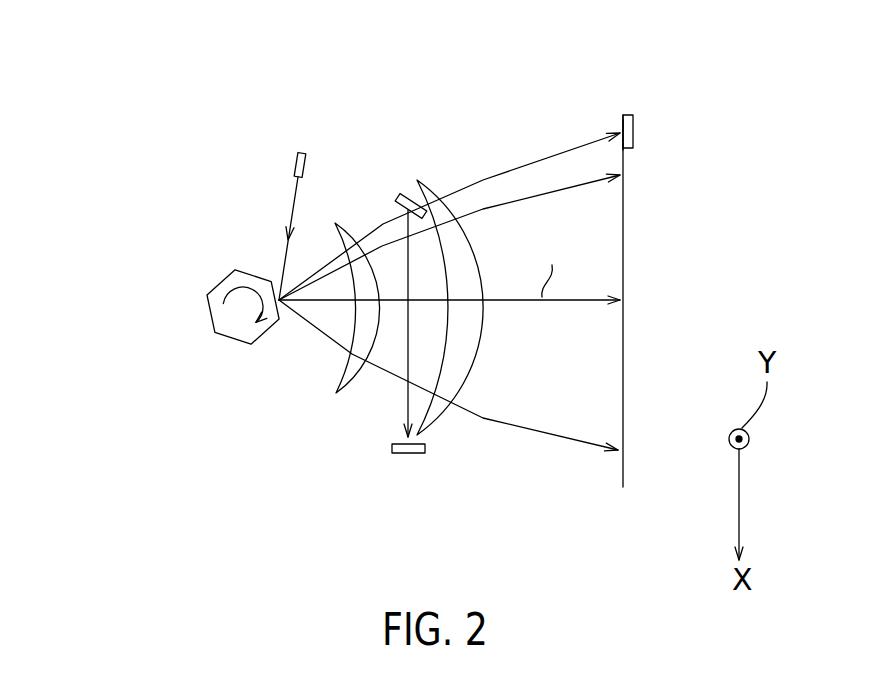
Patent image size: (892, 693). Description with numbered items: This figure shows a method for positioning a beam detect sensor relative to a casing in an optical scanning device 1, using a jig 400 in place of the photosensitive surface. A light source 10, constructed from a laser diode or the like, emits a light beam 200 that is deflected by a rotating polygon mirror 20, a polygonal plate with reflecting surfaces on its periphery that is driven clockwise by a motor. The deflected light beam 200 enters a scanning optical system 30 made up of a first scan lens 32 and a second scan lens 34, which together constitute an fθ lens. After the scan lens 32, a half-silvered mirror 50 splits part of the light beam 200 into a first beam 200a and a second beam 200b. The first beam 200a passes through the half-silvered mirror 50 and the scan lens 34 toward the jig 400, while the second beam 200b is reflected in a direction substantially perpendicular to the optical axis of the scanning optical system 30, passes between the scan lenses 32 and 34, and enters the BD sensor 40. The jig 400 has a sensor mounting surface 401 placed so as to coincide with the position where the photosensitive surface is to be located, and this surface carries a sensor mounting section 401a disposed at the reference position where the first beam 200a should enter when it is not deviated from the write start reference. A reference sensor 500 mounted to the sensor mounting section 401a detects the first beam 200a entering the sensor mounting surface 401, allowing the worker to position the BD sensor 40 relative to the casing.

The optical scanning device 1 is at (172, 138).
The light source 10 is at (298, 156).
The light beam 200 is at (292, 203).
The polygon mirror 20 is at (232, 332).
The scanning optical system 30 is at (438, 90).
The scan lens 32 is at (335, 223).
The scan lens 34 is at (417, 181).
The half-silvered mirror 50 is at (405, 193).
The second beam 200b is at (404, 406).
The BD sensor 40 is at (412, 457).
The first beam 200a is at (543, 152).
The jig 400 is at (650, 248).
The sensor mounting surface 401 is at (623, 470).
The sensor mounting section 401a is at (641, 134).
The reference sensor 500 is at (637, 122).